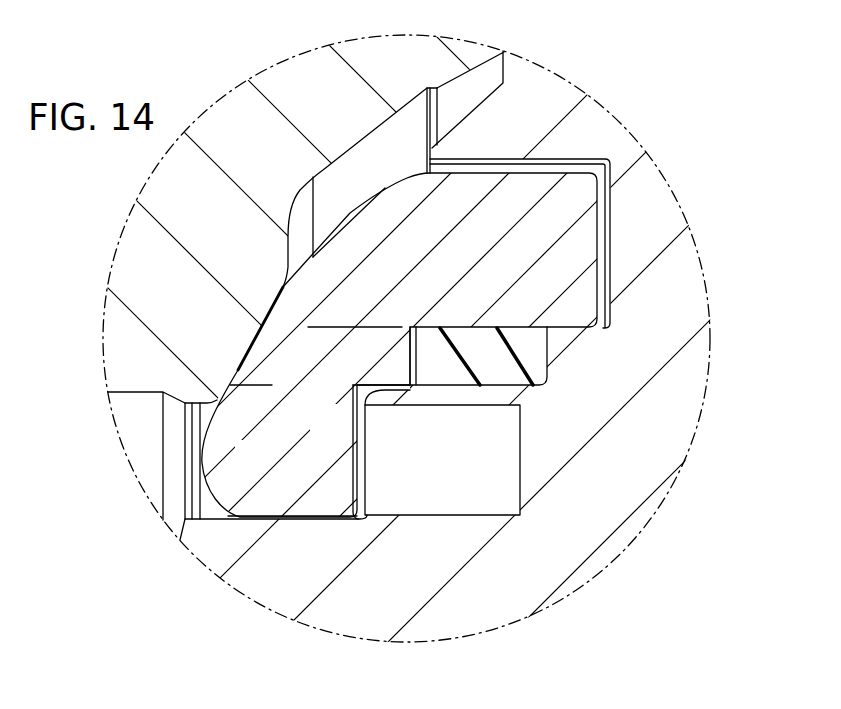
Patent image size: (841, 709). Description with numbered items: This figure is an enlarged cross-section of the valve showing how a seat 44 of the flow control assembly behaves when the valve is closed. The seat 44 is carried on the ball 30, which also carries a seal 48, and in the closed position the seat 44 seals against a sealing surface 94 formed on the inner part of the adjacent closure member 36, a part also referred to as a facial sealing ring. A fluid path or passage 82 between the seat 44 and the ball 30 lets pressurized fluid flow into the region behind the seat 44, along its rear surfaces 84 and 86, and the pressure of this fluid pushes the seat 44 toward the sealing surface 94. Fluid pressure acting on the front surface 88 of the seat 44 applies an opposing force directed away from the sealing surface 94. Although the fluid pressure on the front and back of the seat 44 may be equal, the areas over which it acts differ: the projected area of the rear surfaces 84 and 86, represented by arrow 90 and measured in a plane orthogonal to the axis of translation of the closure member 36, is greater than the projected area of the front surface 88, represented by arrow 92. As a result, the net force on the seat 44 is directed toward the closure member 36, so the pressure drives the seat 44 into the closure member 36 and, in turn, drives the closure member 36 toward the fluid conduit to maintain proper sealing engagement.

The ball 30 is at (548, 86).
The closure member 36 is at (302, 77).
The seat 44 is at (538, 183).
The seal 48 is at (533, 367).
The fluid passage 82 is at (287, 520).
The rear surface 84 is at (358, 462).
The rear surface 86 is at (410, 353).
The front surface 88 is at (210, 423).
The arrow representing projected area of rear surfaces 90 is at (323, 330).
The arrow representing projected area of front surface 92 is at (250, 387).
The sealing surface 94 is at (258, 332).